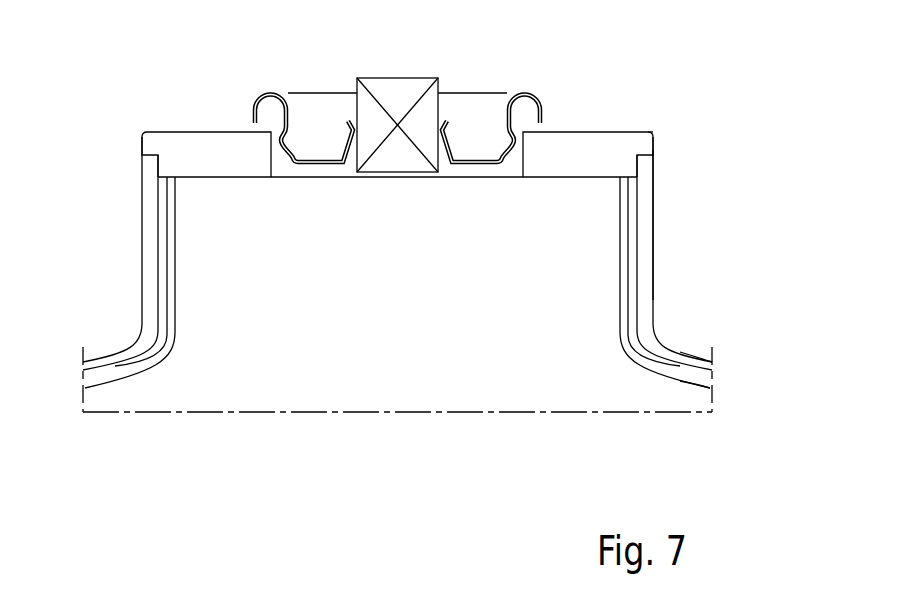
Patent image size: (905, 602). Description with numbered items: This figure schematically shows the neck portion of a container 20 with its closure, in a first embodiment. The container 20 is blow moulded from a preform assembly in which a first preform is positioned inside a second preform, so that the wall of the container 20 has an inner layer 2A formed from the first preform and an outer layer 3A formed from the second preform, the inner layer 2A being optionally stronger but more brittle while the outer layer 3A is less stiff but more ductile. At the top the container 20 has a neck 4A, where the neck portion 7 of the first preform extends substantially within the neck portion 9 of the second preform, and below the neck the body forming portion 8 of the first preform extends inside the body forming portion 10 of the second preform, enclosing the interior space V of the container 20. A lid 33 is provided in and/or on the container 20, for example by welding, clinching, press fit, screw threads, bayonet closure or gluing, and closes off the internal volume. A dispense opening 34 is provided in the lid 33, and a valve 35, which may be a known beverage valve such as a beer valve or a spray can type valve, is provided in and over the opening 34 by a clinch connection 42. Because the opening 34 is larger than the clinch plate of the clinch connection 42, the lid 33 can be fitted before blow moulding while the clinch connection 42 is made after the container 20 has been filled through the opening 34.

The valve 35 is at (397, 93).
The clinch connection 42 is at (542, 87).
The lid 33 is at (585, 145).
The container 20 is at (705, 147).
The neck 4A is at (663, 220).
The neck portion 9 is at (645, 272).
The neck portion 7 is at (624, 232).
The outer layer 3A is at (688, 360).
The body forming portion 10 is at (732, 373).
The inner layer 2A is at (695, 373).
The dispense opening 34 is at (284, 168).
The interior space V is at (405, 357).
The body forming portion 8 is at (551, 357).